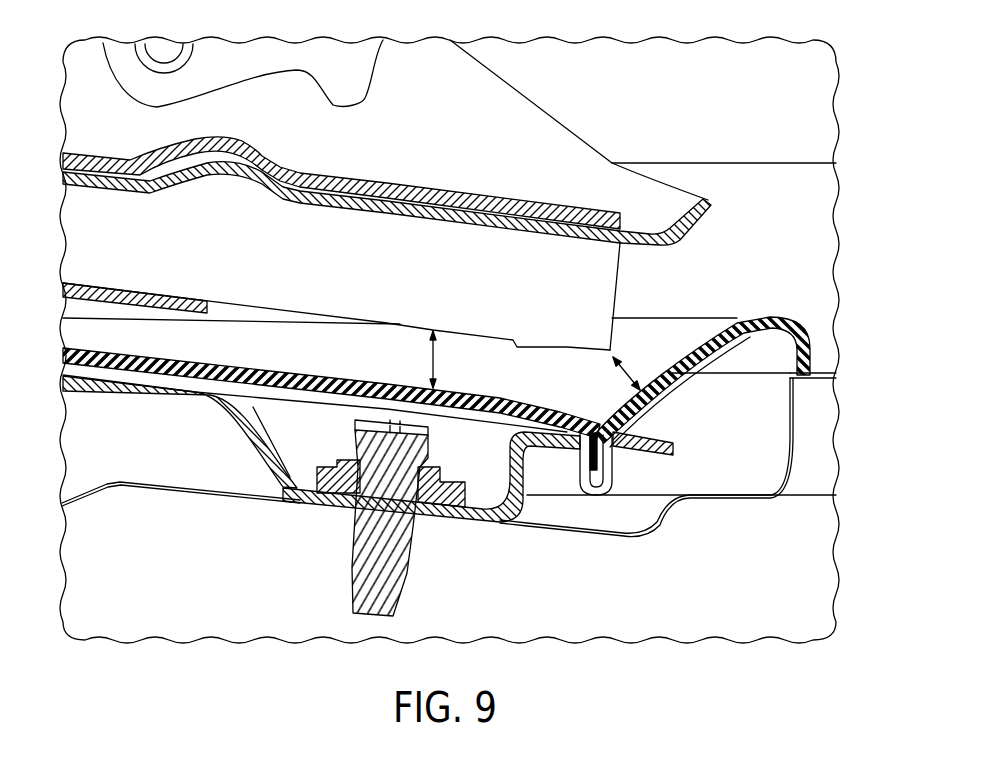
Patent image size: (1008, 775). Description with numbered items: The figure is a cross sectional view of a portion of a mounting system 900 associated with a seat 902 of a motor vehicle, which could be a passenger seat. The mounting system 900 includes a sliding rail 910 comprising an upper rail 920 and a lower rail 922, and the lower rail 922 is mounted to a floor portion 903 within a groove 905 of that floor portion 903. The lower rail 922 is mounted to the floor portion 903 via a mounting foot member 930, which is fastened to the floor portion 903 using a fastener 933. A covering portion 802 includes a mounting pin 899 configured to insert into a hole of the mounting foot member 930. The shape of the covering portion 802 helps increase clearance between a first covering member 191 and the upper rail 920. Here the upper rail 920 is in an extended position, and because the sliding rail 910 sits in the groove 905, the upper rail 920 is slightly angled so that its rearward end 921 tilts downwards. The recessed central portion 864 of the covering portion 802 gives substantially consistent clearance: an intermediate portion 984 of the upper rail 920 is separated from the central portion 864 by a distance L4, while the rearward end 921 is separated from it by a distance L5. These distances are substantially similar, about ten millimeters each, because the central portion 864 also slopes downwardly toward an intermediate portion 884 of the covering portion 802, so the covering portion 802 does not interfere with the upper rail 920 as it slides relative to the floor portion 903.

The mounting system 900 is at (795, 146).
The seat 902 is at (503, 82).
The sliding rail 910 is at (688, 251).
The upper rail 920 is at (617, 300).
The rearward end 921 is at (672, 243).
The lower rail 922 is at (92, 288).
The intermediate portion 984 is at (418, 331).
The central portion 864 is at (345, 360).
The covering portion 802 is at (733, 322).
The intermediate portion 884 is at (647, 401).
The first covering member 191 is at (816, 311).
The floor portion 903 is at (827, 374).
The groove 905 is at (758, 446).
The mounting pin 899 is at (603, 468).
The mounting foot member 930 is at (483, 510).
The fastener 933 is at (360, 537).
The distance L4 is at (433, 358).
The distance L5 is at (628, 372).